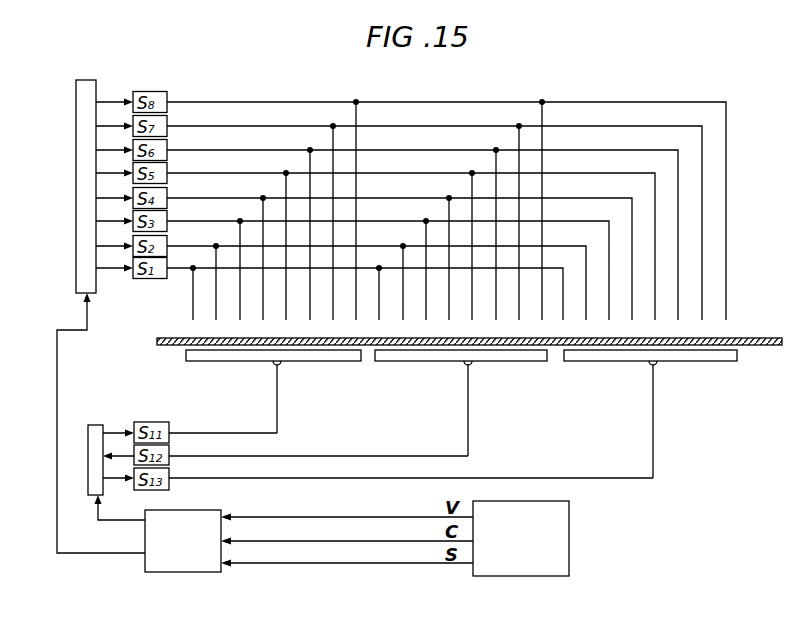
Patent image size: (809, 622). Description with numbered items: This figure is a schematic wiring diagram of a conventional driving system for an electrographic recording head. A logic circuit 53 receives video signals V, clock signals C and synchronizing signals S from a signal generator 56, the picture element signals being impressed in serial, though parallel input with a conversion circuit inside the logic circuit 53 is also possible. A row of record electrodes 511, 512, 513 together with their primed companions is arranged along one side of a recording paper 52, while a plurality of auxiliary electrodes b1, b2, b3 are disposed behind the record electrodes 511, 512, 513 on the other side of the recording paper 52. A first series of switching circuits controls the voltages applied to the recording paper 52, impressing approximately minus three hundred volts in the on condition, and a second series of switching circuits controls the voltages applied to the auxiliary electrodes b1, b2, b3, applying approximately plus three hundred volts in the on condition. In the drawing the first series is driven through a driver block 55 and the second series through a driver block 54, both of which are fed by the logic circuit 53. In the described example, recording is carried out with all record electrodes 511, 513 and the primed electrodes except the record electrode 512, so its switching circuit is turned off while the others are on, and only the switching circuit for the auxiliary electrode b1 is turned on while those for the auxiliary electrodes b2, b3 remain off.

The recording paper 52 is at (763, 337).
The logic circuit 53 is at (188, 552).
The switch driver 54 is at (96, 438).
The switch driver / scanning circuit 55 is at (88, 206).
The signal generator 56 is at (557, 550).
The auxiliary electrode b1 is at (320, 356).
The auxiliary electrode b2 is at (525, 356).
The auxiliary electrode b3 is at (703, 356).
The record electrode 511 is at (195, 291).
The record electrode 512 is at (250, 267).
The record electrode 513 is at (299, 243).